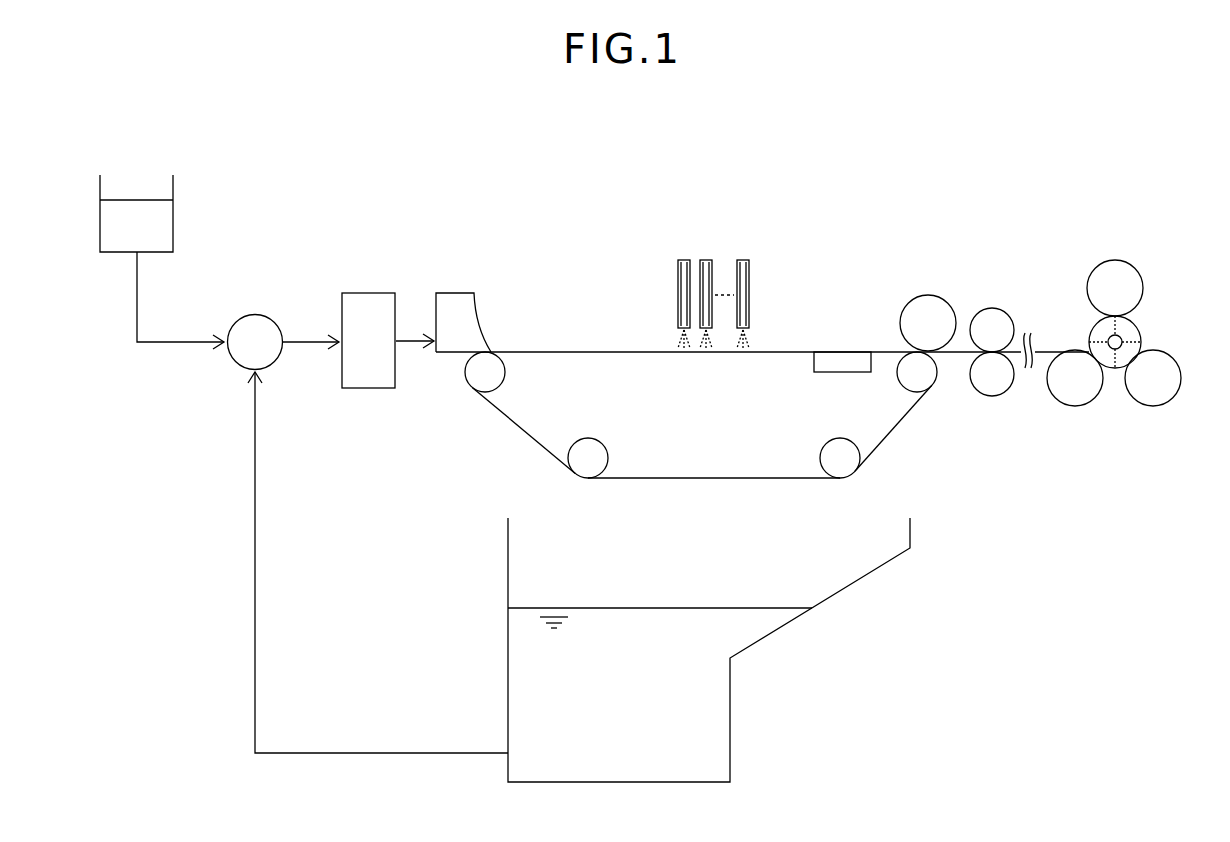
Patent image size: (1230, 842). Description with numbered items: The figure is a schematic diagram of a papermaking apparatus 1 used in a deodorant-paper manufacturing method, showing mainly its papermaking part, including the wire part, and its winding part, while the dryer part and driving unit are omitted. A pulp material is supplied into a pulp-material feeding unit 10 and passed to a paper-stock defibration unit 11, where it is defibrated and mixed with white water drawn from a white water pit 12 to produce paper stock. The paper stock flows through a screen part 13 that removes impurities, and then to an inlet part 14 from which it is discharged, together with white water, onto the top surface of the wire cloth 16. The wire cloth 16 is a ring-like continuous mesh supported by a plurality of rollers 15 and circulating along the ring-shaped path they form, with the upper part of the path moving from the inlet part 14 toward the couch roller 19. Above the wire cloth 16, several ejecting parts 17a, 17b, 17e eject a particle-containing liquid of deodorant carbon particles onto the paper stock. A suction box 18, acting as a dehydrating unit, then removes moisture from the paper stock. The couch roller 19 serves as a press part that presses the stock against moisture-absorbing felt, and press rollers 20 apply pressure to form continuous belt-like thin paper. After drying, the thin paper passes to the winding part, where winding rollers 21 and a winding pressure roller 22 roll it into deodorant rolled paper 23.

The papermaking apparatus 1 is at (877, 113).
The pulp-material feeding unit 10 is at (99, 223).
The paper-stock defibration unit 11 is at (257, 313).
The white water pit 12 is at (507, 661).
The screen part 13 is at (370, 292).
The inlet part 14 is at (463, 291).
The rollers 15 is at (507, 373).
The wire cloth 16 is at (522, 433).
The ejecting part 17a is at (678, 290).
The ejecting part 17b is at (700, 273).
The ejecting part 17e is at (750, 289).
The suction box 18 is at (813, 362).
The couch roller 19 is at (933, 294).
The press rollers 20 is at (995, 306).
The winding rollers 21 is at (1076, 408).
The winding pressure roller 22 is at (1119, 260).
The deodorant rolled paper 23 is at (1141, 340).